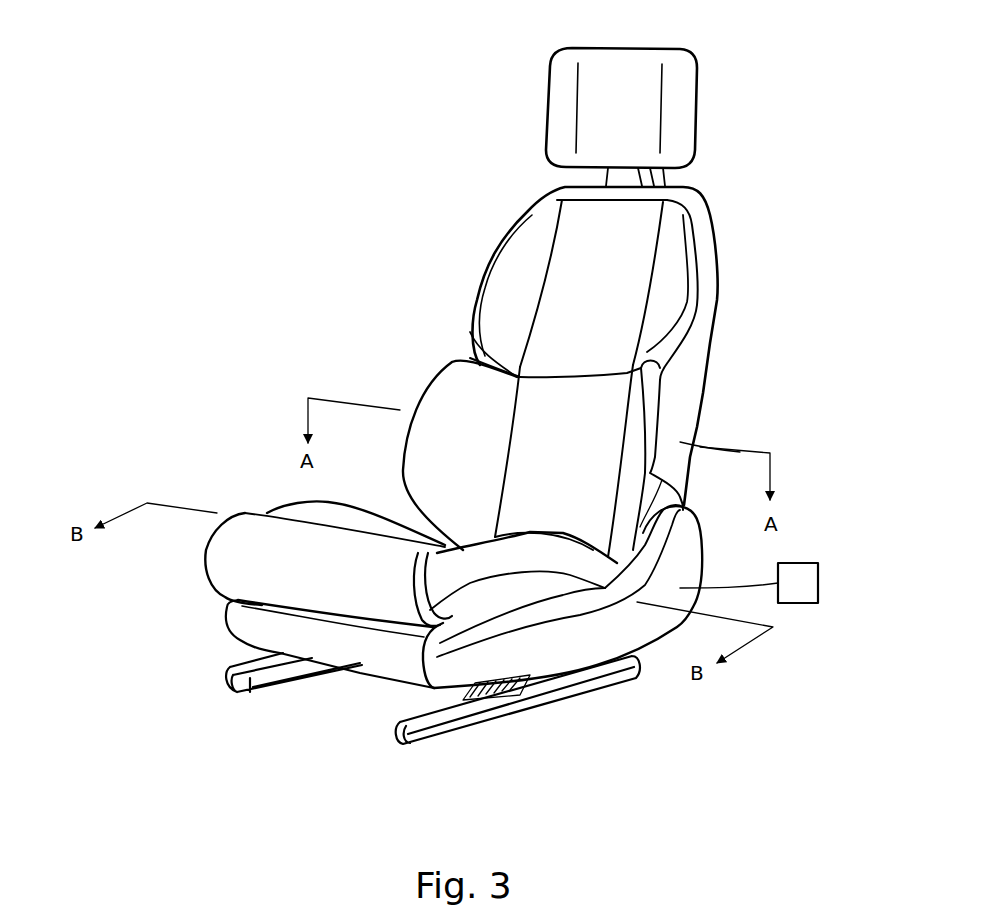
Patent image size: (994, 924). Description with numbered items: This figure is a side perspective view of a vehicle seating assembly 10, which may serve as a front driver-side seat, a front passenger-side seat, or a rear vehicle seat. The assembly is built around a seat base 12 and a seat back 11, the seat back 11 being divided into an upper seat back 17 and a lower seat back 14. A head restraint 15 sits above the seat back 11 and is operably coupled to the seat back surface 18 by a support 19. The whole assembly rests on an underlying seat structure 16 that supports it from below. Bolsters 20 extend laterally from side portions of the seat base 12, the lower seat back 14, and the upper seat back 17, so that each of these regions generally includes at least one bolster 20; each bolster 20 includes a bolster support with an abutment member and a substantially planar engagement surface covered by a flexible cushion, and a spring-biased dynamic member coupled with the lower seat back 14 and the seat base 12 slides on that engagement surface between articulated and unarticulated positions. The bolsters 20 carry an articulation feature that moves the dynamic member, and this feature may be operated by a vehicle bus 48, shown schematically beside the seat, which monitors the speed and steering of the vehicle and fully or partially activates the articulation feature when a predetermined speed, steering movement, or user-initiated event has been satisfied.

The vehicle seating assembly 10 is at (791, 90).
The seat back 11 is at (800, 183).
The seat base 12 is at (387, 538).
The lower seat back 14 is at (567, 431).
The head restraint 15 is at (637, 63).
The underlying seat structure 16 is at (281, 673).
The upper seat back 17 is at (595, 253).
The seat back surface 18 is at (713, 344).
The support 19 is at (655, 176).
The bolsters 20 is at (520, 258).
The vehicle bus 48 is at (812, 580).